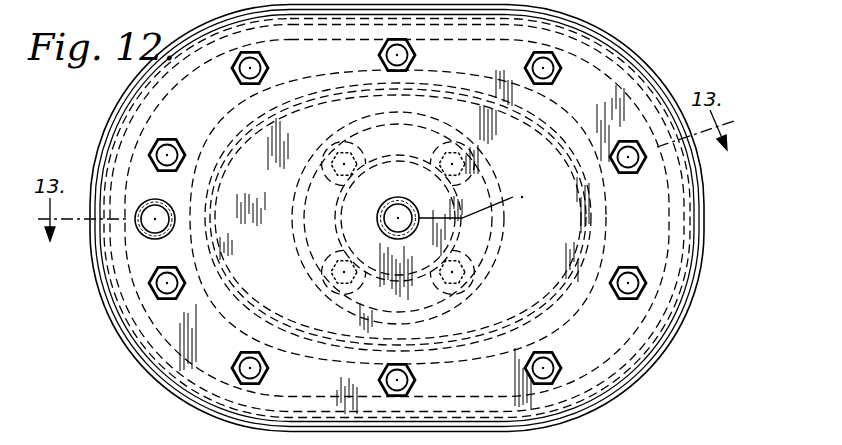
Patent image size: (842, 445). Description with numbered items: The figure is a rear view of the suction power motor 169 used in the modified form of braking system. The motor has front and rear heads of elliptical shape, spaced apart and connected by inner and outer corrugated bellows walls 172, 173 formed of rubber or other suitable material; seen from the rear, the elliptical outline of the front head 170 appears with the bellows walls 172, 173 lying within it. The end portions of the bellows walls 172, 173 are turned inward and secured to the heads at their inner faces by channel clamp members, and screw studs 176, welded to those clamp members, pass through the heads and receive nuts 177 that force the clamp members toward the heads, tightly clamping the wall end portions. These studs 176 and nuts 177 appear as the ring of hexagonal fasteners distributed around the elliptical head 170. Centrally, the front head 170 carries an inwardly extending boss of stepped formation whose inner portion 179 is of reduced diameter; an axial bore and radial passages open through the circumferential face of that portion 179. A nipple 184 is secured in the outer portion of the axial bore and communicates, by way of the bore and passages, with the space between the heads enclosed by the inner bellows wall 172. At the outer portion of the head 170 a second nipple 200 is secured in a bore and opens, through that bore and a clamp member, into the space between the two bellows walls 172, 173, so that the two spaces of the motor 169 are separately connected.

The suction power motor 169 is at (119, 343).
The front head 170 is at (133, 258).
The inner corrugated bellows wall 172 is at (213, 139).
The outer corrugated bellows wall 173 is at (199, 66).
The screw studs 176 is at (620, 295).
The nuts 177 is at (635, 176).
The inner portion of boss 179 is at (333, 239).
The nipple 184 is at (404, 200).
The second nipple 200 is at (170, 213).